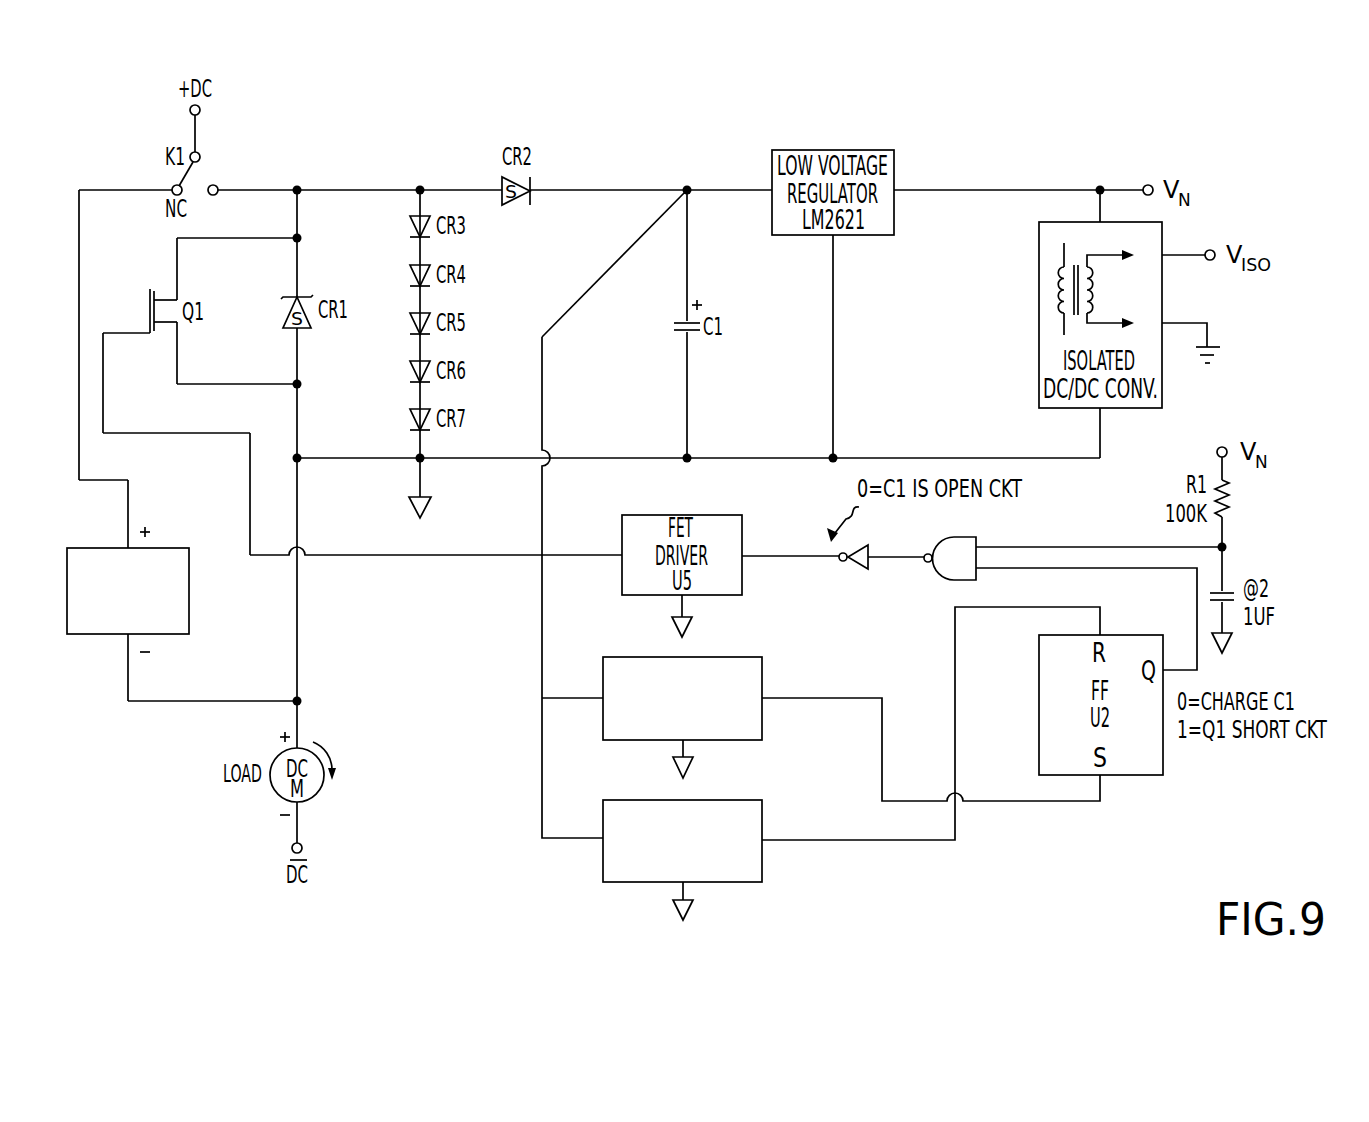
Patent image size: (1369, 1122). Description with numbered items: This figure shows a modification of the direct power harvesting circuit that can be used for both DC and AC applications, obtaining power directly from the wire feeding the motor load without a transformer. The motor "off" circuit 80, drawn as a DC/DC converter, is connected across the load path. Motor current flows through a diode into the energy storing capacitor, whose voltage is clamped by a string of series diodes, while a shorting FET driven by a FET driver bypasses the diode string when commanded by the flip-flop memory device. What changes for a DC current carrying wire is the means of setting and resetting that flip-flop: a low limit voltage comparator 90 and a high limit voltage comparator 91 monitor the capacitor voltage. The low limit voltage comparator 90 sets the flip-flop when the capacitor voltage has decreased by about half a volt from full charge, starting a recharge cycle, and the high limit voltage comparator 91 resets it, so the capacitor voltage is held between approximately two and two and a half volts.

The motor "off" circuit 80 is at (105, 634).
The low limit voltage comparator 90 is at (642, 657).
The high limit voltage comparator 91 is at (633, 800).